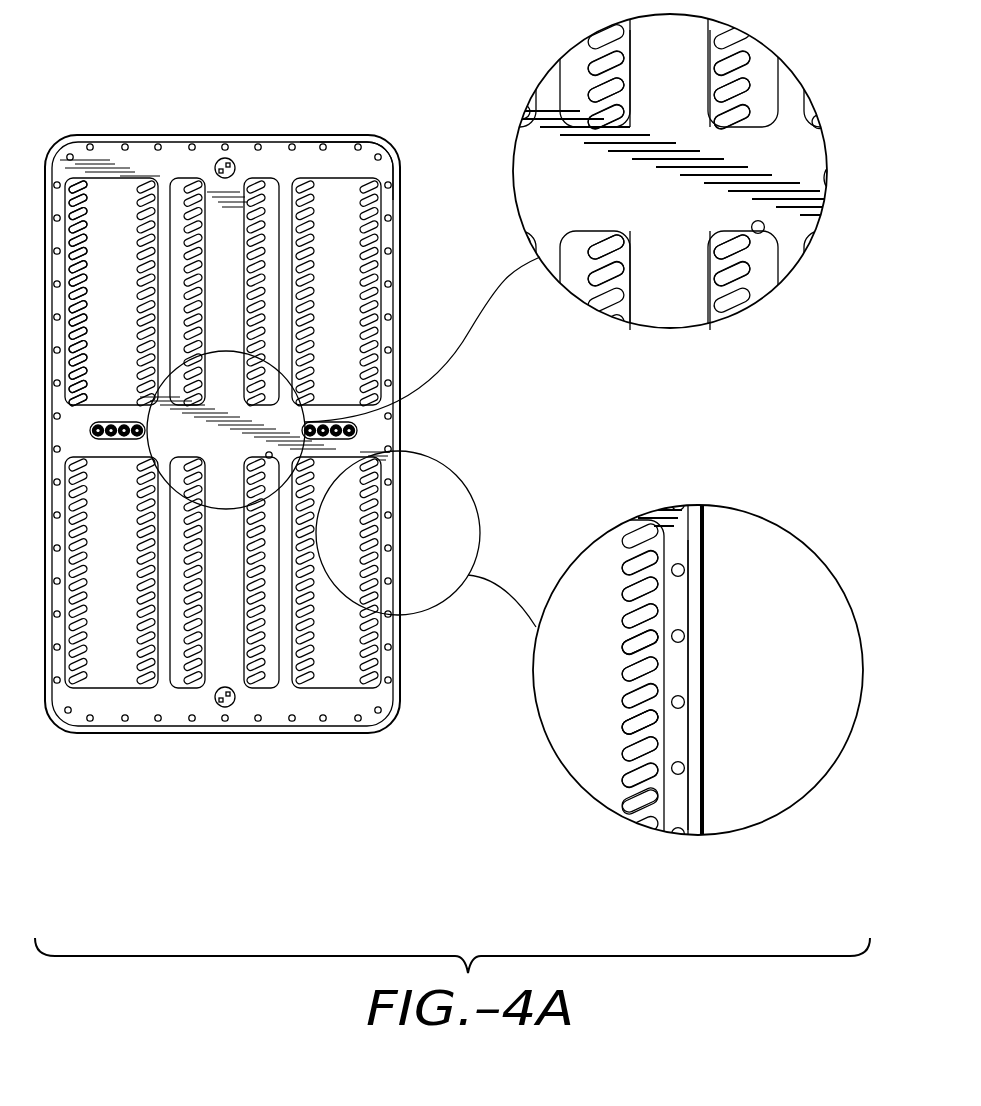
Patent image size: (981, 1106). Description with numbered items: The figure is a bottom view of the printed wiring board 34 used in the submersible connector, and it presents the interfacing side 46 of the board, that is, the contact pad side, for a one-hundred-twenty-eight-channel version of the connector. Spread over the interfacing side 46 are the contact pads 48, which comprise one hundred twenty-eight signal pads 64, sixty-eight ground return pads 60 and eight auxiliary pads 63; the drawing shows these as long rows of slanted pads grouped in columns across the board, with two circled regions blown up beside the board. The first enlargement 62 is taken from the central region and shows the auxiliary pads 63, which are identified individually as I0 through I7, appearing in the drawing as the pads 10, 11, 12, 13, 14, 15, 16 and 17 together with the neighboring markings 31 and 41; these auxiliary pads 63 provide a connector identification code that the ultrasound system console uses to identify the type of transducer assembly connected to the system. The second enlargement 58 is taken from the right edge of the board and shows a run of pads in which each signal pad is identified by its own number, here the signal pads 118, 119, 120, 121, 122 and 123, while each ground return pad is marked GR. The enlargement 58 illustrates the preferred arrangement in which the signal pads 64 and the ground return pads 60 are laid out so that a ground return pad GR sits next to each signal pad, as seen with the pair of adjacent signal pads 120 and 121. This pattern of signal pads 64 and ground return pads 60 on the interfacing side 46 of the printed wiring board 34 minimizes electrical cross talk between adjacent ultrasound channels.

The printed wiring board 34 is at (386, 735).
The interfacing side 46 is at (351, 165).
The contact pads 48 is at (80, 182).
The enlargement 58 is at (711, 838).
The ground return pads 60 is at (668, 652).
The enlargement 62 is at (673, 331).
The auxiliary pads 63 is at (710, 76).
The signal pads 64 is at (655, 697).
The auxiliary pad I0 10 is at (595, 90).
The auxiliary pad I1 11 is at (596, 116).
The auxiliary pad I2 12 is at (744, 90).
The auxiliary pad I3 13 is at (744, 116).
The auxiliary pad I4 14 is at (595, 247).
The auxiliary pad I5 15 is at (595, 274).
The auxiliary pad I6 16 is at (744, 247).
The auxiliary pad I7 17 is at (744, 274).
The contact slot 31 is at (595, 63).
The contact slot 41 is at (745, 63).
The ground return pad GR is at (672, 571).
The signal pad 118 is at (619, 589).
The signal pad 119 is at (619, 616).
The signal pad 120 is at (619, 669).
The signal pad 121 is at (619, 696).
The signal pad 122 is at (619, 749).
The signal pad 123 is at (619, 775).